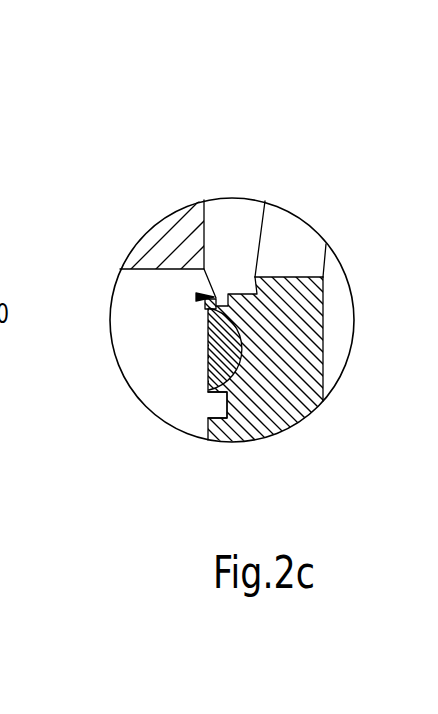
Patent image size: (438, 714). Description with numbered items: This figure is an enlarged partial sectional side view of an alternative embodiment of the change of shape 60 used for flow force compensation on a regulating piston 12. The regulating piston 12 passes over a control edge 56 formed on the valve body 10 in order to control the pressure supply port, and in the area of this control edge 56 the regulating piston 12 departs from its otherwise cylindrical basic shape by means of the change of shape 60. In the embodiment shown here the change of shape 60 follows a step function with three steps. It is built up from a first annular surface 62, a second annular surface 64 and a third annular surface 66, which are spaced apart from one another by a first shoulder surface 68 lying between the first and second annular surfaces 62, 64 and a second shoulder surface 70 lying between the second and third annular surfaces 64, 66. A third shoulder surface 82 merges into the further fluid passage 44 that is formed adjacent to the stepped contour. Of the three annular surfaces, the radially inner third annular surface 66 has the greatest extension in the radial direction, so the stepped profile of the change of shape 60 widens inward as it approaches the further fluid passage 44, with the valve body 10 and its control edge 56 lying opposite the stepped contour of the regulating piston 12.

The valve body 10 is at (170, 246).
The regulating piston 12 is at (287, 375).
The further fluid passage 44 is at (288, 252).
The control edge 56 is at (210, 263).
The change of shape 60 is at (196, 297).
The first annular surface 62 is at (207, 312).
The second annular surface 64 is at (223, 300).
The third annular surface 66 is at (278, 320).
The first shoulder surface 68 is at (208, 365).
The second shoulder surface 70 is at (220, 388).
The third shoulder surface 82 is at (285, 291).